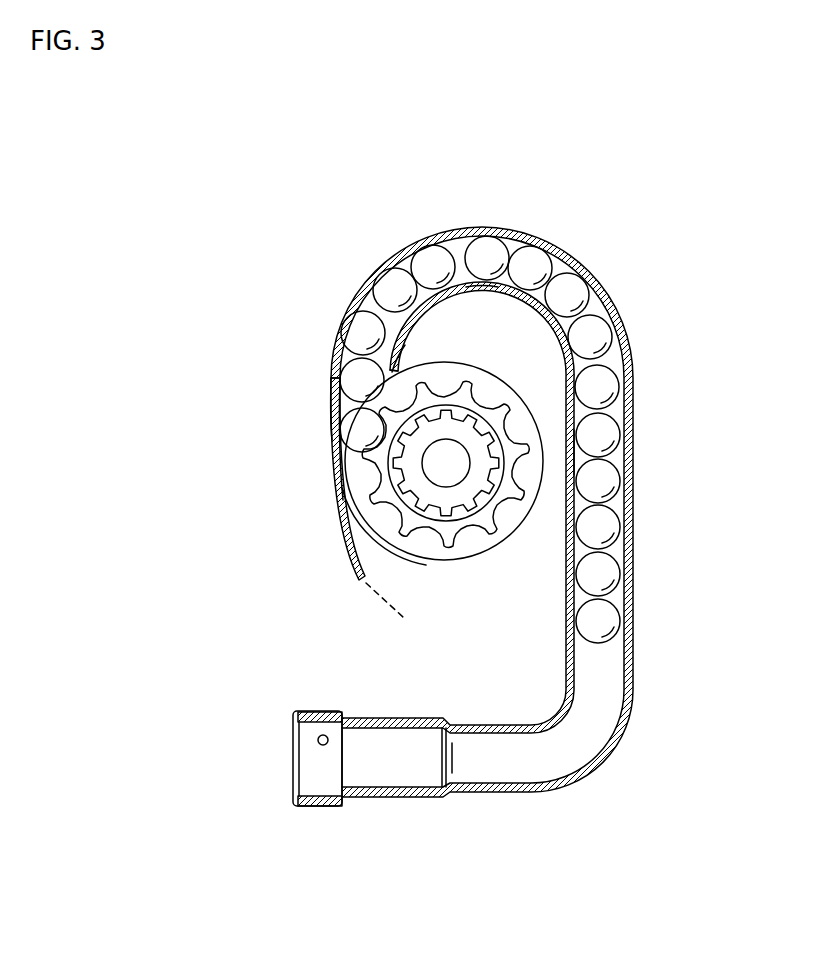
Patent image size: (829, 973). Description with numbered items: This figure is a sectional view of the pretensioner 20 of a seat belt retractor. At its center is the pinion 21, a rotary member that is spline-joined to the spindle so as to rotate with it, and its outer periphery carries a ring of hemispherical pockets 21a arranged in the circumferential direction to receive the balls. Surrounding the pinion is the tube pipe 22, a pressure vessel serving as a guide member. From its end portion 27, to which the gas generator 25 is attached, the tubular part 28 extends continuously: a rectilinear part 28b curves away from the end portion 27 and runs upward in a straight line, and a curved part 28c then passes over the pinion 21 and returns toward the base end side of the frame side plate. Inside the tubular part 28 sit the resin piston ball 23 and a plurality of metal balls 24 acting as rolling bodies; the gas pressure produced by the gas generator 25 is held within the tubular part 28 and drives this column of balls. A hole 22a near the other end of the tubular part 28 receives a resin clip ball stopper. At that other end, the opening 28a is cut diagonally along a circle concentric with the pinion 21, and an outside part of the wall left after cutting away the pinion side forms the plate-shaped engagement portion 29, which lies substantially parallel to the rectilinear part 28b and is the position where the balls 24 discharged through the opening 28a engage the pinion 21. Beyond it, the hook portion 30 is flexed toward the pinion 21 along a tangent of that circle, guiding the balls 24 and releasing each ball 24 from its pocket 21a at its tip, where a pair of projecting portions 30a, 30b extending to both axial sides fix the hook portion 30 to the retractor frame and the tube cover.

The pretensioner 20 is at (463, 470).
The pinion 21 is at (526, 483).
The hemispherical pockets 21a is at (425, 523).
The tube pipe 22 is at (463, 513).
The hole 22a is at (331, 383).
The piston ball 23 is at (605, 618).
The metal balls 24 is at (603, 573).
The gas generator 25 is at (373, 779).
The end portion 27 is at (313, 805).
The tubular part 28 is at (519, 446).
The opening 28a is at (410, 376).
The rectilinear part 28b is at (633, 452).
The curved part 28c is at (452, 227).
The engagement portion 29 is at (330, 458).
The hook portion 30 is at (310, 484).
The projecting portion 30a is at (429, 614).
The projecting portion 30b is at (384, 600).